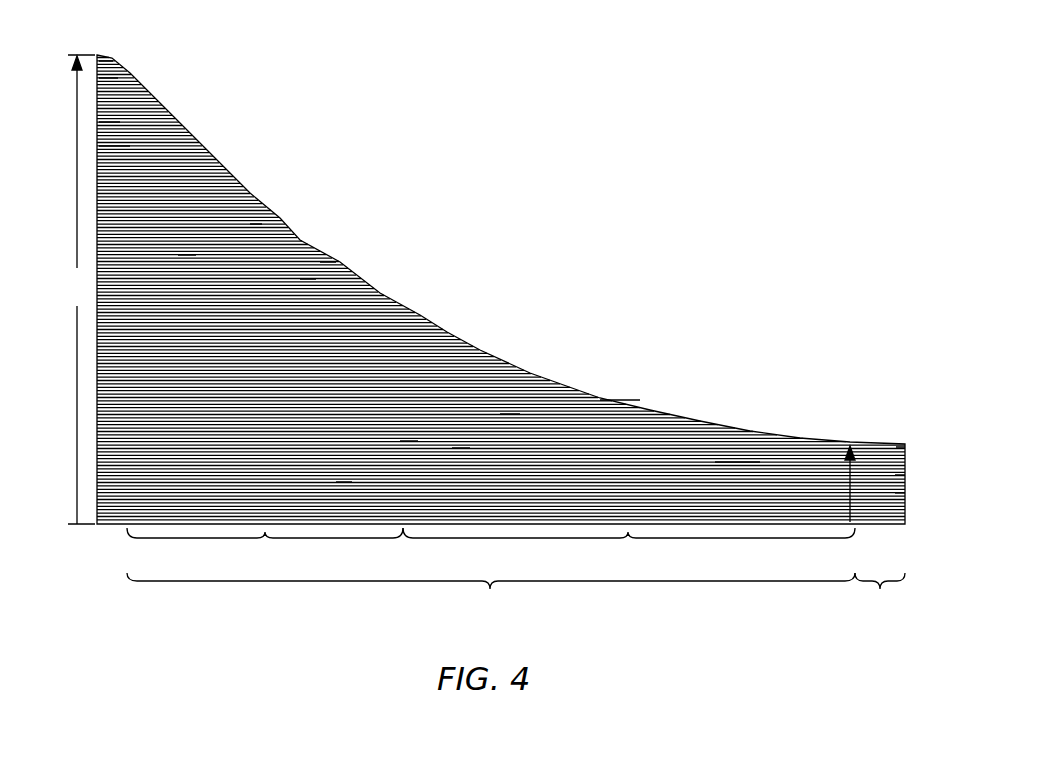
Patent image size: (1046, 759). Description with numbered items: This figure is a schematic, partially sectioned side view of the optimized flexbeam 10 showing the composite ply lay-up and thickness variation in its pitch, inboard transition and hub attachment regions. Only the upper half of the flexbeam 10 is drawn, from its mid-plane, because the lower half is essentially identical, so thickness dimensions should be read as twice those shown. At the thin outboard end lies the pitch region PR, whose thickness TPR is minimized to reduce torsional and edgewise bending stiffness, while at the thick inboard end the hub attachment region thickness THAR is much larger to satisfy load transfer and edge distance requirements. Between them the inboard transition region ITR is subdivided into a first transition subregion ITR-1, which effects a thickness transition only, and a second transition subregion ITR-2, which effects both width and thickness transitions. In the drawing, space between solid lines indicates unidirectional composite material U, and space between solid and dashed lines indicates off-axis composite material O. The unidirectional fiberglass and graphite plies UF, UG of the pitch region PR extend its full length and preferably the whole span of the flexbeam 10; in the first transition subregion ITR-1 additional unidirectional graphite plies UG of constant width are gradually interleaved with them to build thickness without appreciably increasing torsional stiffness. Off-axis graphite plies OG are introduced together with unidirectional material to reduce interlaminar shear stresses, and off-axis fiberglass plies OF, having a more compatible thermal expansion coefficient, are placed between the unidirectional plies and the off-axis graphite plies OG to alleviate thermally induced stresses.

The optimized flexbeam 10 is at (776, 293).
The hub attachment region thickness THAR is at (74, 289).
The off-axis composite material O is at (110, 63).
The unidirectional composite material U is at (108, 80).
The off-axis graphite plies OG is at (203, 261).
The off-axis fiberglass plies OF is at (372, 352).
The unidirectional graphite plies UG is at (513, 410).
The unidirectional fiberglass plies UF is at (918, 493).
The pitch region thickness TPR is at (852, 487).
The second transition subregion ITR-2 is at (265, 551).
The first transition subregion ITR-1 is at (629, 551).
The inboard transition region ITR is at (491, 595).
The pitch region PR is at (880, 595).